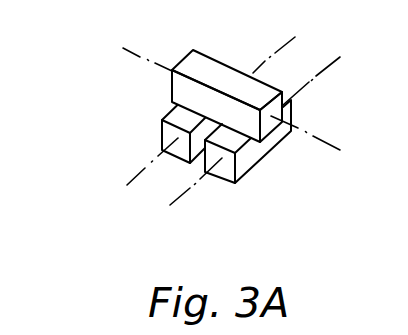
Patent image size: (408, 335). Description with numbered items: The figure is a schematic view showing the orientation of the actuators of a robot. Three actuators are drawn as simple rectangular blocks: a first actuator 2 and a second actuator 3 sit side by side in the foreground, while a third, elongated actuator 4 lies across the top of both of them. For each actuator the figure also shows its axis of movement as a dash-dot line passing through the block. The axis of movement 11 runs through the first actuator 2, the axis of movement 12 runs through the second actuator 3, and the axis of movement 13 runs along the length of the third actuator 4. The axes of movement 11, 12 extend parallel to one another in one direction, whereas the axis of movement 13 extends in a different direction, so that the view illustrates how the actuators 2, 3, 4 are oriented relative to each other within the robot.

The actuator 2 is at (163, 139).
The actuator 3 is at (247, 162).
The actuator 4 is at (220, 68).
The axis of movement 11 is at (139, 175).
The axis of movement 12 is at (175, 202).
The axis of movement 13 is at (326, 141).